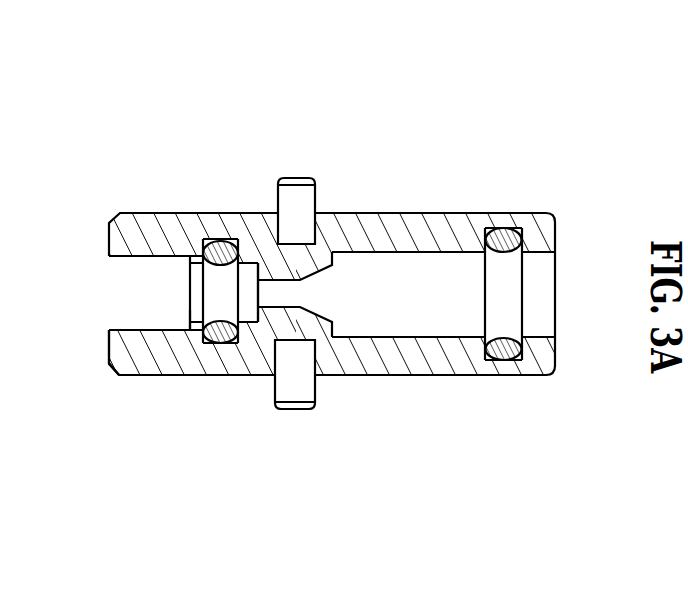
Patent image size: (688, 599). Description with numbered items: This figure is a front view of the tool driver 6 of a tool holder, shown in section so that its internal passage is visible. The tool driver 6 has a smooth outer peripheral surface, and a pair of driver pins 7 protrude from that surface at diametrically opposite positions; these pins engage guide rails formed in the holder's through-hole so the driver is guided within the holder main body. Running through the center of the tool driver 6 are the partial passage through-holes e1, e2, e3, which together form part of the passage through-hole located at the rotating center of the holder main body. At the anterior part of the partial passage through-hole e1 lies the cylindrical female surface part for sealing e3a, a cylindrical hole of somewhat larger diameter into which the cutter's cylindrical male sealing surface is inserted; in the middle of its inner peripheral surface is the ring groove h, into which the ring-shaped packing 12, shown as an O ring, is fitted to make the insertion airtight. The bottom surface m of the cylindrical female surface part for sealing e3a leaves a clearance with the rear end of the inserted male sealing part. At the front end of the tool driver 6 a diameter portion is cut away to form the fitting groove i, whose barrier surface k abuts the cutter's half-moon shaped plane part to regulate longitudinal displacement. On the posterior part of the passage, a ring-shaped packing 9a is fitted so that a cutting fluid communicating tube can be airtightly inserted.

The tool driver 6 is at (245, 236).
The driver pin 7 is at (298, 193).
The ring-shaped packing 12 is at (219, 241).
The ring-shaped packing 9a is at (503, 232).
The ring groove h is at (204, 345).
The bottom surface m is at (257, 262).
The partial passage through-hole e1 is at (277, 297).
The partial passage through-hole e2 is at (412, 313).
The partial passage through-hole e3 is at (120, 282).
The cylindrical female surface part for sealing e3a is at (194, 318).
The fitting groove i is at (135, 327).
The barrier surface k is at (105, 345).